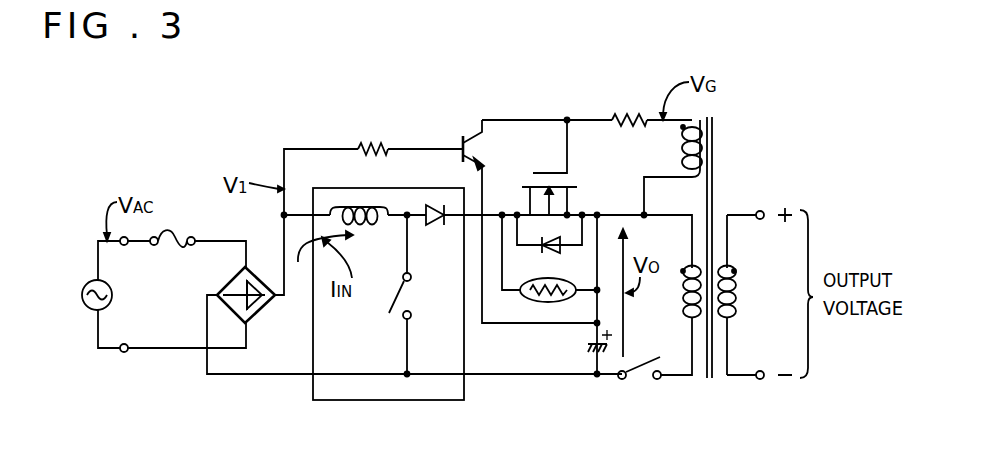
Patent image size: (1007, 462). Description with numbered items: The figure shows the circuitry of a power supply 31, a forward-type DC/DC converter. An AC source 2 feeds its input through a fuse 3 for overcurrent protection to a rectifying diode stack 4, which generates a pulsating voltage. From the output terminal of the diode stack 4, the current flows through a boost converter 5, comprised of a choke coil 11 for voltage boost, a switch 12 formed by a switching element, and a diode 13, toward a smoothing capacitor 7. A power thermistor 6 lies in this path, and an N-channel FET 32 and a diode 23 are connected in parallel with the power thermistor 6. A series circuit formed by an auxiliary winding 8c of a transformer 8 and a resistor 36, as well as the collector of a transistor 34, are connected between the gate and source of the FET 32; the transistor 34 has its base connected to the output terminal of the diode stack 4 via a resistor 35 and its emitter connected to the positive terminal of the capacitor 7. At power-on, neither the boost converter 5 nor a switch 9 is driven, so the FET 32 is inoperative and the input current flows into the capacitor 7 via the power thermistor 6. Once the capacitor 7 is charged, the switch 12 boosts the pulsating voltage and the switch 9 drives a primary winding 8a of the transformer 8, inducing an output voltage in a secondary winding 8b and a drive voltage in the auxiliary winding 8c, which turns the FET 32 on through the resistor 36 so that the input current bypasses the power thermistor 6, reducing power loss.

The AC power source 2 is at (88, 284).
The fuse 3 is at (171, 229).
The rectifying diode stack 4 is at (258, 314).
The boost converter 5 is at (423, 188).
The power thermistor 6 is at (548, 302).
The smoothing capacitor 7 is at (590, 344).
The transformer 8 is at (703, 248).
The primary winding 8a is at (682, 298).
The secondary winding 8b is at (738, 298).
The auxiliary winding 8c is at (680, 150).
The switch 9 is at (637, 384).
The choke coil 11 is at (360, 226).
The switch 12 is at (414, 297).
The diode 13 is at (440, 224).
The diode 23 is at (550, 254).
The power supply 31 is at (318, 103).
The N-channel FET 32 is at (552, 172).
The transistor 34 is at (461, 141).
The resistor 35 is at (357, 144).
The resistor 36 is at (614, 114).